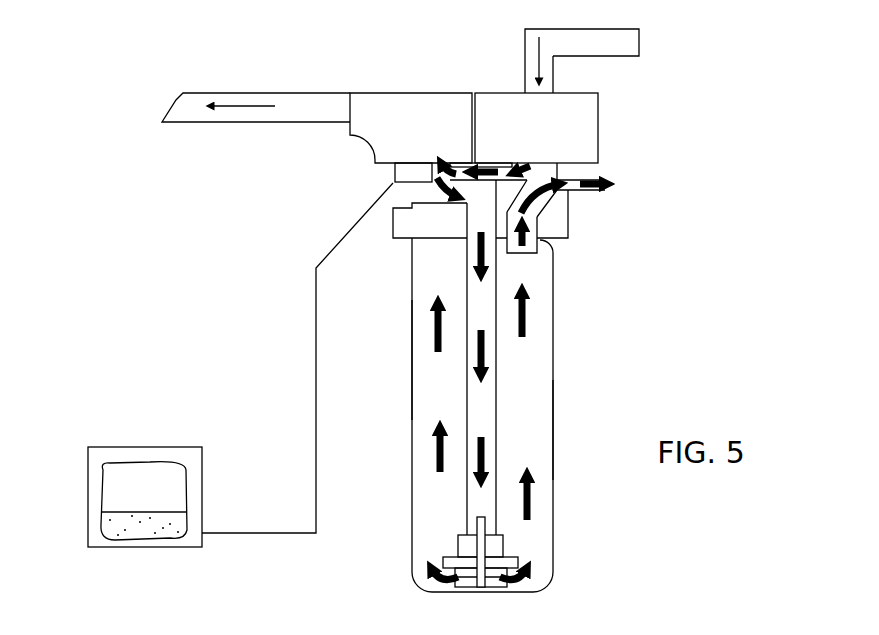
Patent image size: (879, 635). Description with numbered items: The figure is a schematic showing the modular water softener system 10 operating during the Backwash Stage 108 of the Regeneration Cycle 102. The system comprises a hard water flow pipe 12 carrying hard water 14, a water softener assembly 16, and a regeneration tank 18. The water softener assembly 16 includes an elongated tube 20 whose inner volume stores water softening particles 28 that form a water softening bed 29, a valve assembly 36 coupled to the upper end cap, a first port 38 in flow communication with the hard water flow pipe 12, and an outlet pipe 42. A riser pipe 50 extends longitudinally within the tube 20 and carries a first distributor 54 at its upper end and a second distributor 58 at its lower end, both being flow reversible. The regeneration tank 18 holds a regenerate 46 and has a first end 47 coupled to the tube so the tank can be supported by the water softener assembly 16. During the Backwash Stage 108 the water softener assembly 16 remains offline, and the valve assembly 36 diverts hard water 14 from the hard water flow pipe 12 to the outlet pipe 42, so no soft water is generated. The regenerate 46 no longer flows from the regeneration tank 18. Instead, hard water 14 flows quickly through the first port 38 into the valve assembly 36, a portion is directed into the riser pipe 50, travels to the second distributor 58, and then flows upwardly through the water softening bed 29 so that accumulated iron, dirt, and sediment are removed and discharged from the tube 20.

The modular water softener system 10 is at (682, 102).
The hard water flow pipe 12 is at (613, 35).
The hard water 14 is at (392, 483).
The water softener assembly 16 is at (616, 360).
The regeneration tank 18 is at (95, 460).
The elongated tube 20 is at (543, 437).
The water softening particles 28 is at (543, 337).
The water softening bed 29 is at (422, 408).
The valve assembly 36 is at (585, 155).
The first port 38 is at (553, 90).
The outlet pipe 42 is at (245, 123).
The regenerate 46 is at (182, 520).
The first end 47 is at (183, 447).
The riser pipe 50 is at (485, 407).
The first distributor 54 is at (552, 229).
The second distributor 58 is at (512, 562).
The Regeneration Cycle 102 is at (352, 178).
The Backwash Stage 108 is at (340, 210).